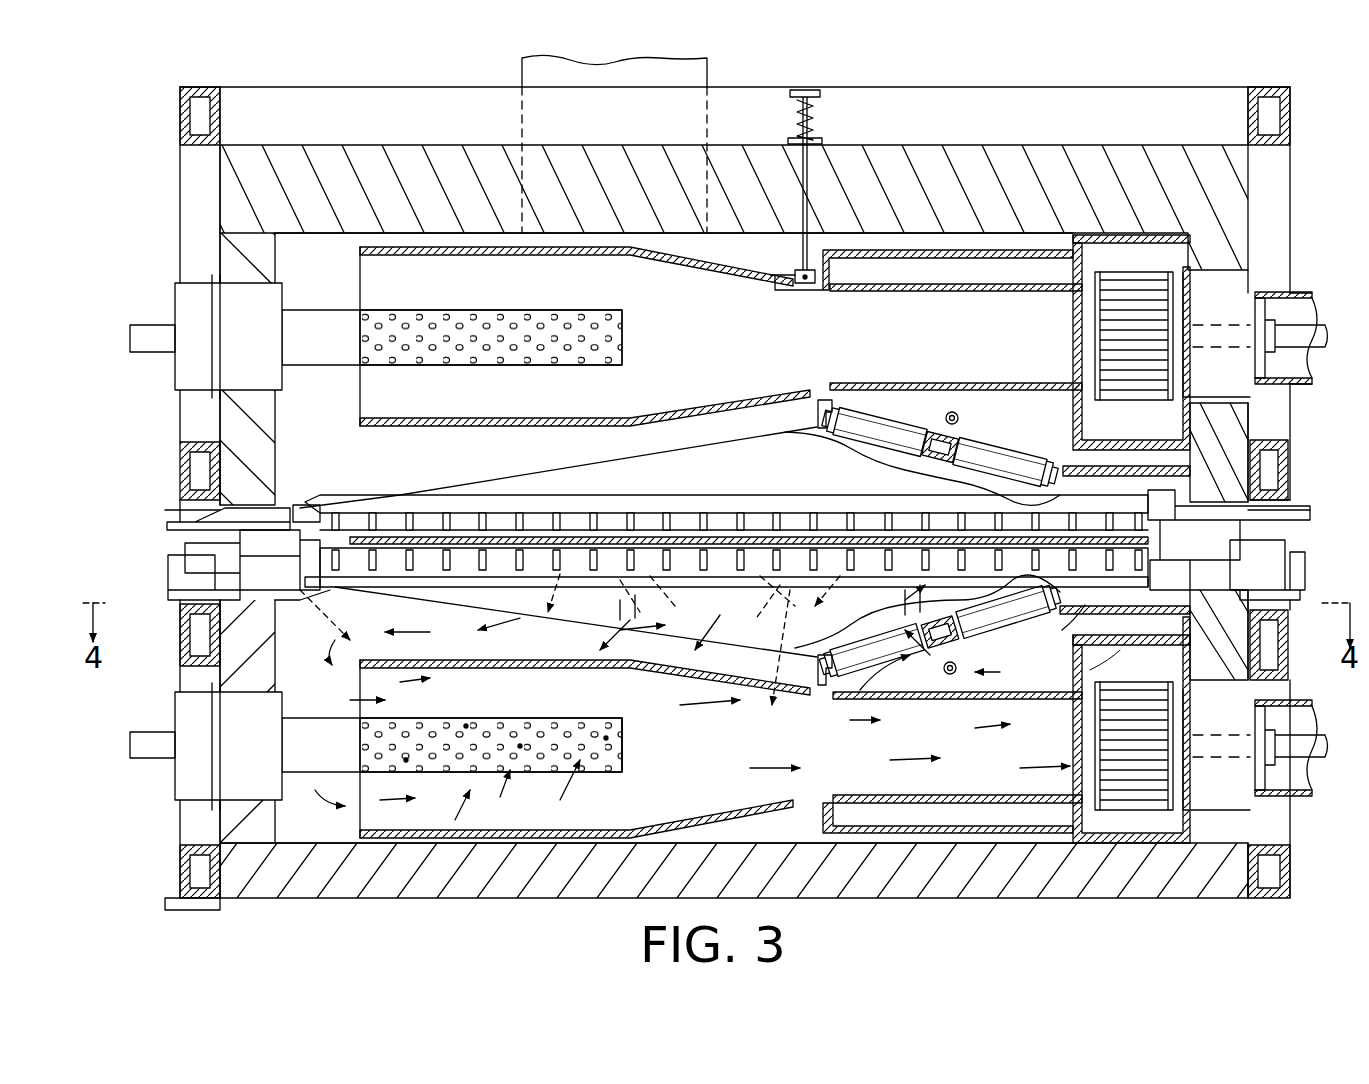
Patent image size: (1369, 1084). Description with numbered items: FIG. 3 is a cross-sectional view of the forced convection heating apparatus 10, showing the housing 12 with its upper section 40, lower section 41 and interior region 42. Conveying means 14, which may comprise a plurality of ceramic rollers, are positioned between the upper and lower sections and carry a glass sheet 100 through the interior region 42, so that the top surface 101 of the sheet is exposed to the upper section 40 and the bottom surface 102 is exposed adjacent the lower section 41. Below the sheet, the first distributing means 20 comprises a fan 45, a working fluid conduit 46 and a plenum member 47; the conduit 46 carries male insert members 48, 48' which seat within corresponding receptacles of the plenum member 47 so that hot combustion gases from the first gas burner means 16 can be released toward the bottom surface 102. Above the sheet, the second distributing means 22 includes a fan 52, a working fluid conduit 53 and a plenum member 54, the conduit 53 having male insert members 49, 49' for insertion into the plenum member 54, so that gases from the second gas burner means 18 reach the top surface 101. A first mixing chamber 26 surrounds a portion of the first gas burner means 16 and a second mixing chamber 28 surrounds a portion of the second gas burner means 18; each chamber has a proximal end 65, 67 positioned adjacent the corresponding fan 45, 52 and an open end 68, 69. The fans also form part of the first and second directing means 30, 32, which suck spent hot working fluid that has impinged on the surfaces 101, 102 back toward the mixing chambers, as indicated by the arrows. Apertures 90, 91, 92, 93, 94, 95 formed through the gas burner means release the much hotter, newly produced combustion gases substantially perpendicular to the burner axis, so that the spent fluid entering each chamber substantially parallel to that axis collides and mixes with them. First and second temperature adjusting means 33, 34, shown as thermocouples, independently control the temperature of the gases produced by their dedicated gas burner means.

The forced convection heating apparatus 10 is at (1172, 76).
The housing 12 is at (1290, 195).
The conveying means 14 is at (195, 538).
The first gas burner means 16 is at (302, 716).
The second gas burner means 18 is at (328, 370).
The first distributing means 20 is at (1160, 657).
The second distributing means 22 is at (1160, 432).
The first mixing chamber 26 is at (738, 822).
The second mixing chamber 28 is at (462, 428).
The first directing means 30 is at (1150, 686).
The second directing means 32 is at (1108, 268).
The first temperature adjusting means 33 is at (950, 676).
The second temperature adjusting means 34 is at (958, 418).
The upper section 40 is at (1290, 252).
The lower section 41 is at (360, 898).
The interior region 42 is at (310, 463).
The fan 45 is at (1146, 812).
The working fluid conduit 46 is at (702, 626).
The plenum member 47 is at (1290, 636).
The male insert member 48 is at (927, 658).
The male insert member 48' is at (1010, 670).
The male insert member 49 is at (872, 392).
The male insert member 49' is at (922, 456).
The fan 52 is at (1112, 343).
The working fluid conduit 53 is at (752, 445).
The plenum member 54 is at (1250, 470).
The proximal end 65 is at (980, 802).
The proximal end 67 is at (1000, 258).
The open end 68 is at (358, 816).
The open end 69 is at (358, 274).
The aperture 90 is at (624, 745).
The aperture 91 is at (606, 735).
The aperture 92 is at (407, 762).
The aperture 93 is at (466, 724).
The aperture 94 is at (494, 668).
The aperture 95 is at (520, 742).
The glass sheet 100 is at (682, 533).
The top surface 101 is at (608, 537).
The bottom surface 102 is at (556, 576).